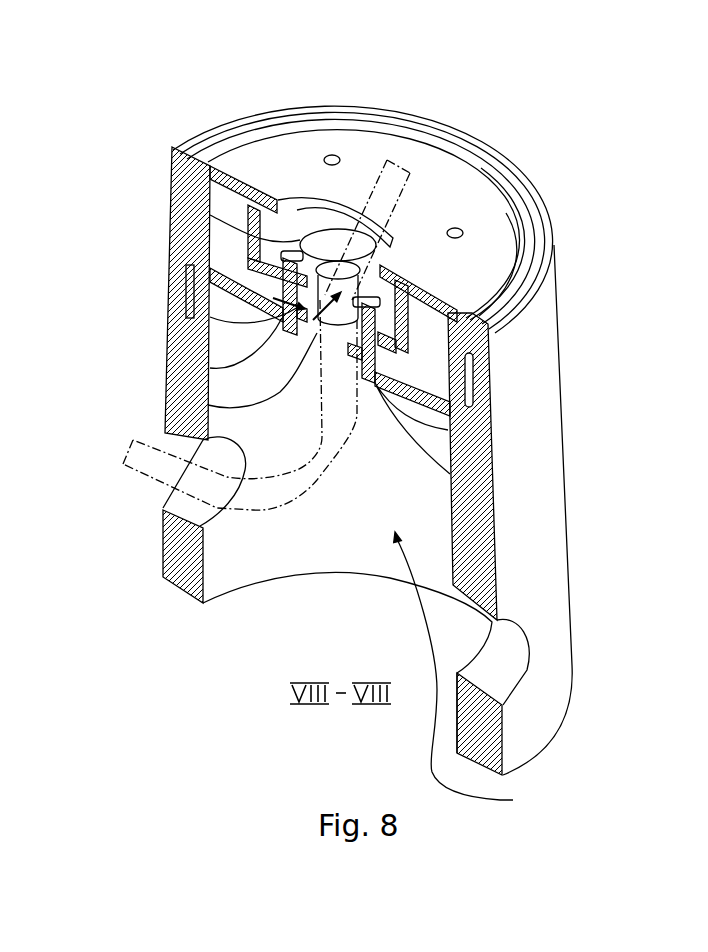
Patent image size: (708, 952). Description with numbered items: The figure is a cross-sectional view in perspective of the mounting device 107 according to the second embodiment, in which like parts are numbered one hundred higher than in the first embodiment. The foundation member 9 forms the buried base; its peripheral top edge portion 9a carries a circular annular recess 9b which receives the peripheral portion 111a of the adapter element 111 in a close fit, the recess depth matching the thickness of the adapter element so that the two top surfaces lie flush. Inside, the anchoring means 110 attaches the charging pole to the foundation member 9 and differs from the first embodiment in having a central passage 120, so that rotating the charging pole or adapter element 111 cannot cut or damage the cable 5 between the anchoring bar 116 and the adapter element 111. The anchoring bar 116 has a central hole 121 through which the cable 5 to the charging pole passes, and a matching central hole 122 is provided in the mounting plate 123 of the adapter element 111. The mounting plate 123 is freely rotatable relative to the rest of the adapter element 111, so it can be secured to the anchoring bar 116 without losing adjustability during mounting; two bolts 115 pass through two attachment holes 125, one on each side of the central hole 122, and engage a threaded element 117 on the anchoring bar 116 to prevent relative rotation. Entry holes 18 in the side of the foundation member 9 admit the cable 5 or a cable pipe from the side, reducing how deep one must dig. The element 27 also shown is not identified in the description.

The foundation member 9 is at (569, 543).
The peripheral top edge portion 9a is at (255, 127).
The annular recess 9b is at (198, 160).
The anchoring means 110 is at (313, 136).
The adapter element 111 is at (368, 135).
The peripheral portion 111a is at (442, 160).
The central hole 122 is at (311, 272).
The mounting plate 123 is at (300, 237).
The bolts 115 is at (285, 283).
The attachment holes 125 is at (285, 305).
The threaded element 117 is at (262, 302).
The central passage 120 is at (218, 368).
The central hole 121 is at (208, 405).
The anchoring bar 116 is at (455, 440).
The entry holes 18 is at (165, 508).
The cable 5 is at (288, 500).
The mounting device 107 is at (283, 775).
The bottom edge 27 is at (513, 800).